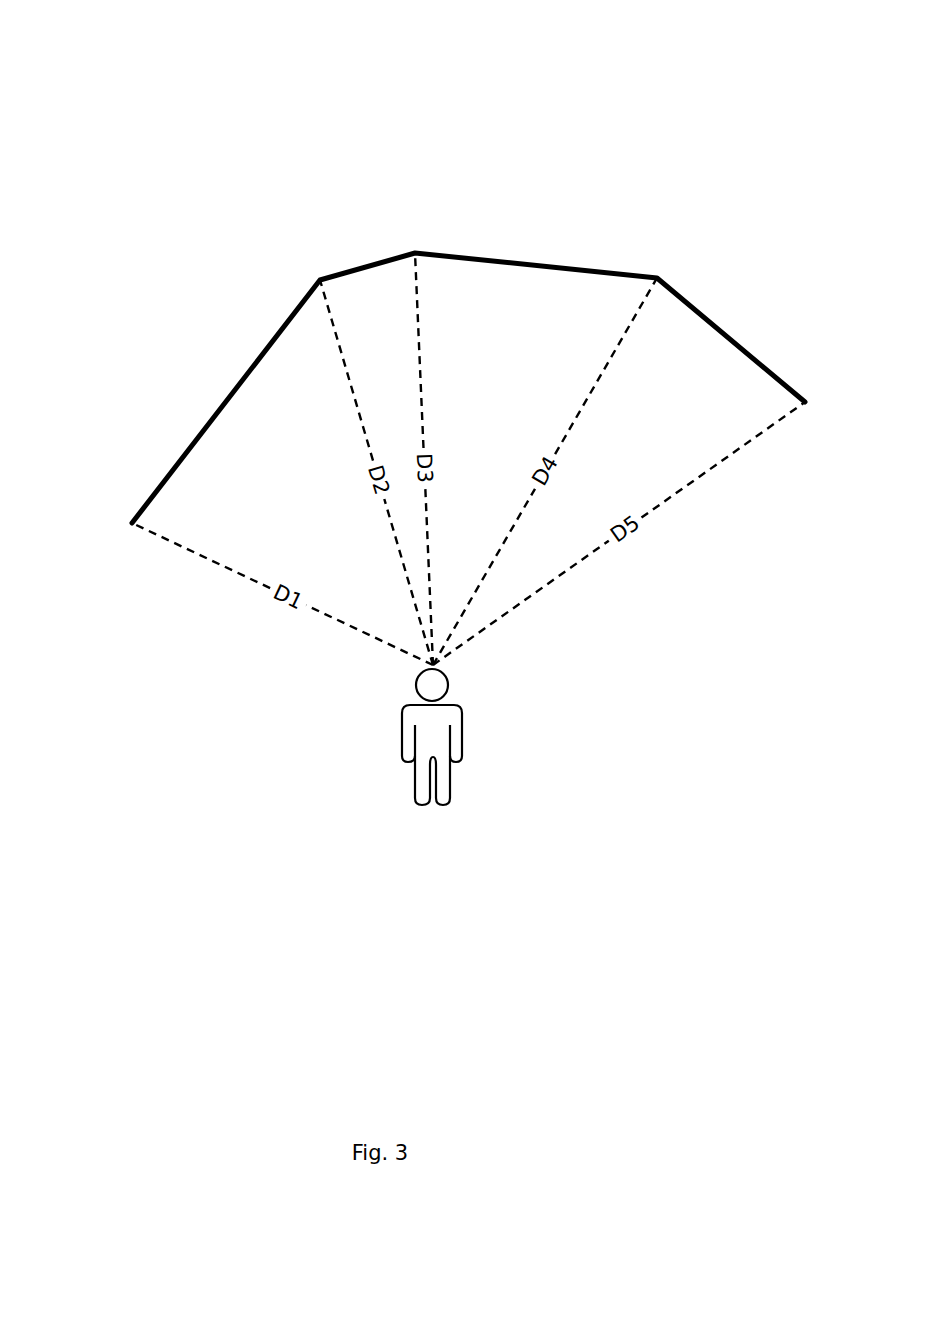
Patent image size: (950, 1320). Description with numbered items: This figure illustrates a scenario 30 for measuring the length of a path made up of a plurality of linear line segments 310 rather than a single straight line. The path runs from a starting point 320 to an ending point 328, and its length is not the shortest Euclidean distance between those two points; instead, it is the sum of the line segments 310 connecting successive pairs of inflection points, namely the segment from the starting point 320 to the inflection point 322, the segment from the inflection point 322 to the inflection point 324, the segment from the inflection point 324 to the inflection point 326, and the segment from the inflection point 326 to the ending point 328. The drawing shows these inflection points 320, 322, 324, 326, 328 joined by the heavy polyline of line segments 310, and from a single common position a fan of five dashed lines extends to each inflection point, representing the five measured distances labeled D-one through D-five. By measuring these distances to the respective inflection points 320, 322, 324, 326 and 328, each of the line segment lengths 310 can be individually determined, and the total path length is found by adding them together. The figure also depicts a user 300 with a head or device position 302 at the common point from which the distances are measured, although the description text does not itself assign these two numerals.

The scenario 30 is at (205, 92).
The linear line segments 310 is at (213, 412).
The starting point 320 is at (126, 513).
The inflection point 322 is at (316, 273).
The inflection point 324 is at (415, 245).
The inflection point 326 is at (659, 273).
The ending point 328 is at (811, 393).
The user 300 is at (424, 808).
The user head / device position 302 is at (445, 668).